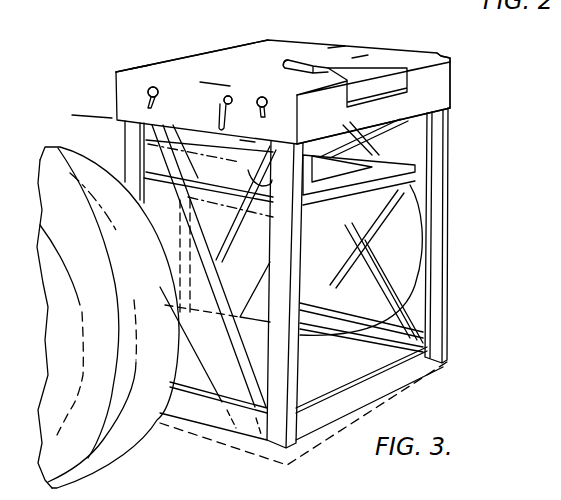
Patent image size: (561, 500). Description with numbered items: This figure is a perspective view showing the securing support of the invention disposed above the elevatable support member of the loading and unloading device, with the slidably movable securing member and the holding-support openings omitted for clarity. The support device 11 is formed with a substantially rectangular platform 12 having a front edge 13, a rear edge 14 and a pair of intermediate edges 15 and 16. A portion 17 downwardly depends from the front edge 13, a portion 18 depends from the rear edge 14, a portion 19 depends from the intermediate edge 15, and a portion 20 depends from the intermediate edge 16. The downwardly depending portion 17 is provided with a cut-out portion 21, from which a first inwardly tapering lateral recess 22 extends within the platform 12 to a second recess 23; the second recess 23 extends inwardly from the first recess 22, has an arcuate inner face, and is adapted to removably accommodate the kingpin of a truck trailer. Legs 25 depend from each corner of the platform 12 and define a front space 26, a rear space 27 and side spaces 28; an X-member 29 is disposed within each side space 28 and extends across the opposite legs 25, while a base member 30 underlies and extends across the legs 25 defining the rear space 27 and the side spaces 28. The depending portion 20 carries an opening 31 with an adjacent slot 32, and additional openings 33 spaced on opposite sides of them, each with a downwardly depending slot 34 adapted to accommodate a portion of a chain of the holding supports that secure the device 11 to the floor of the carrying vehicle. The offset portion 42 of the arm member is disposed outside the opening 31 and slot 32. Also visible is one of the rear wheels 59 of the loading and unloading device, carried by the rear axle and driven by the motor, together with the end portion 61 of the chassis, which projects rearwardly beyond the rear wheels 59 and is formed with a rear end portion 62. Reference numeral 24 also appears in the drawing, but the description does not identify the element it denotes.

The support device 11 is at (466, 127).
The platform 12 is at (248, 74).
The front edge 13 is at (451, 59).
The rear edge 14 is at (168, 61).
The intermediate edge 15 is at (338, 46).
The intermediate edge 16 is at (214, 85).
The downwardly depending portion 17 is at (339, 131).
The downwardly depending portion 18 is at (160, 72).
The downwardly depending portion 19 is at (360, 58).
The downwardly depending portion 20 is at (231, 127).
The cut-out portion 21 is at (451, 72).
The first inwardly tapering lateral recess 22 is at (367, 87).
The second recess 23 is at (303, 65).
The handle end 24 is at (292, 62).
The legs 25 is at (128, 136).
The front space 26 is at (224, 180).
The rear space 27 is at (337, 363).
The side spaces 28 is at (260, 267).
The X-member 29 is at (222, 222).
The base member 30 is at (223, 422).
The opening 31 is at (235, 98).
The slot 32 is at (228, 97).
The additional openings 33 is at (147, 92).
The downwardly depending slot 34 is at (148, 102).
The offset portion 42 is at (220, 115).
The rear wheels 59 is at (404, 257).
The end portion 61 is at (342, 165).
The rear end portion 62 is at (403, 188).